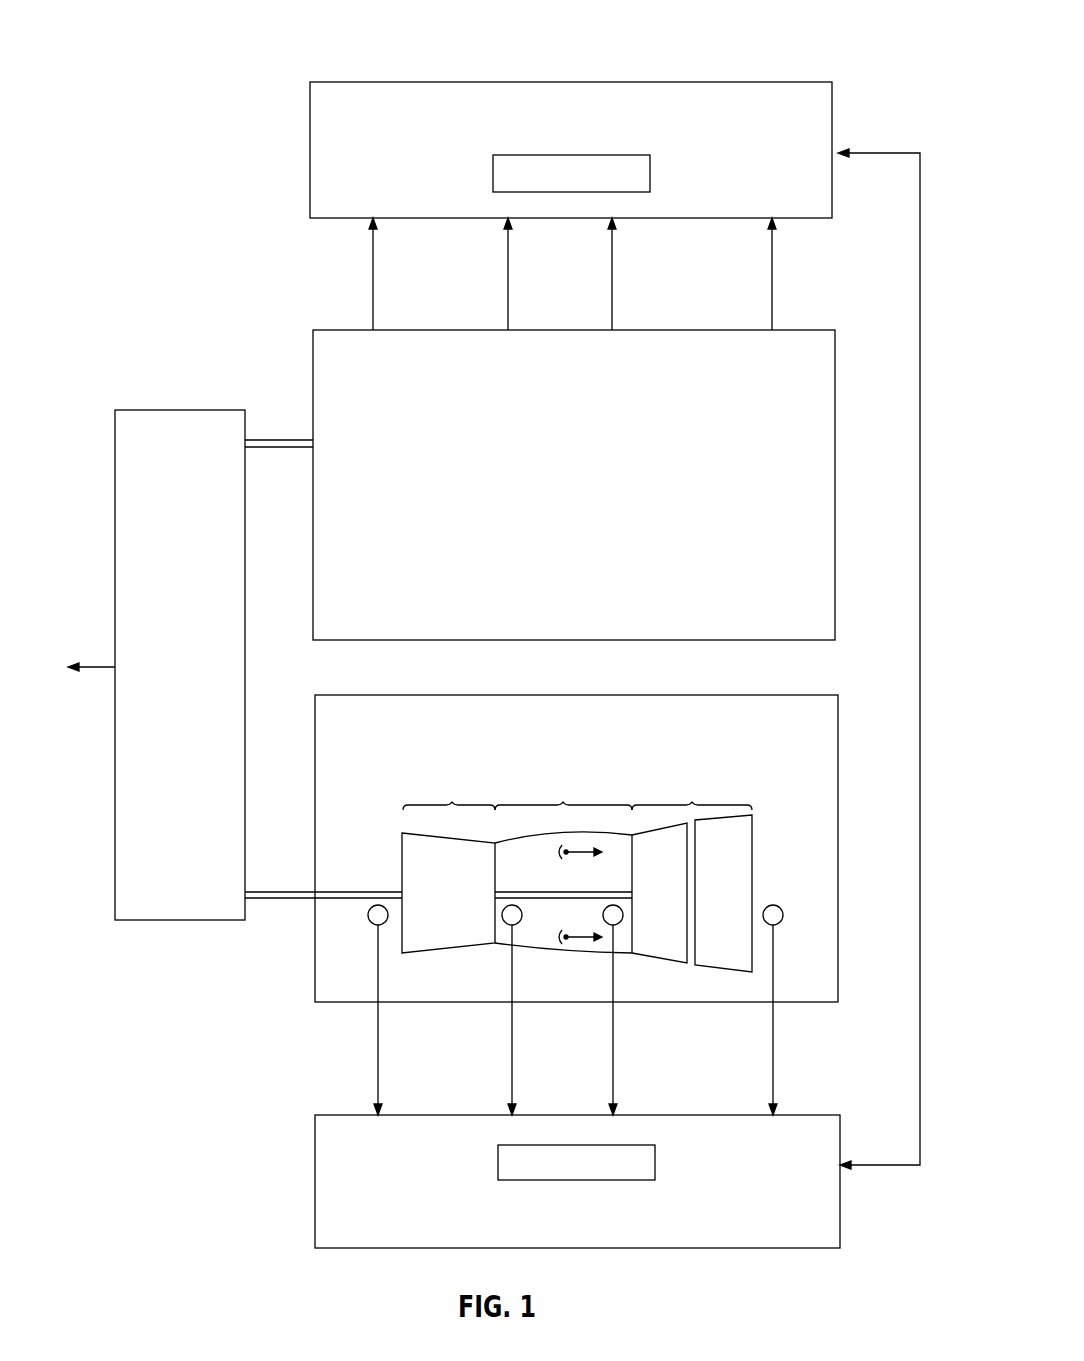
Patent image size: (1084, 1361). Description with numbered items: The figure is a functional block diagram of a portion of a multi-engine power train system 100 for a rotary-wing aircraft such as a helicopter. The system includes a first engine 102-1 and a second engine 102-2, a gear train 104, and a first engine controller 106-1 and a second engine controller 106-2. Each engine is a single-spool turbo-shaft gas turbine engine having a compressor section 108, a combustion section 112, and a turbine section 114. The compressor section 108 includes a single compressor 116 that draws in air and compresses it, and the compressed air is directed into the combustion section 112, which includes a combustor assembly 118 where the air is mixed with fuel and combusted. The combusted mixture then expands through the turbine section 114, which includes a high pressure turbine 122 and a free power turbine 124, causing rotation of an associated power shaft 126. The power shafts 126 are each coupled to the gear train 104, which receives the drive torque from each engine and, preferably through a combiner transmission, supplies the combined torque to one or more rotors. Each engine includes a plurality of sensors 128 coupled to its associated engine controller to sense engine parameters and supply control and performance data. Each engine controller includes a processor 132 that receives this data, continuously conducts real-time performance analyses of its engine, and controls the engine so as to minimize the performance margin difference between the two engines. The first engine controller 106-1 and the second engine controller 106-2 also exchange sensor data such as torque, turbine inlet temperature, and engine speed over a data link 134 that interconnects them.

The multi-engine power train system 100 is at (776, 47).
The first engine 102-1 is at (803, 1002).
The second engine 102-2 is at (340, 330).
The gear train 104 is at (245, 688).
The first engine controller 106-1 is at (803, 1248).
The second engine controller 106-2 is at (337, 82).
The compressor section 108 is at (449, 790).
The combustion section 112 is at (563, 790).
The turbine section 114 is at (692, 790).
The compressor 116 is at (430, 909).
The combustor assembly 118 is at (556, 938).
The high pressure turbine 122 is at (640, 909).
The free power turbine 124 is at (705, 909).
The power shaft 126 is at (280, 437).
The sensor 128 is at (369, 911).
The processor 132 is at (652, 175).
The data link 134 is at (918, 832).